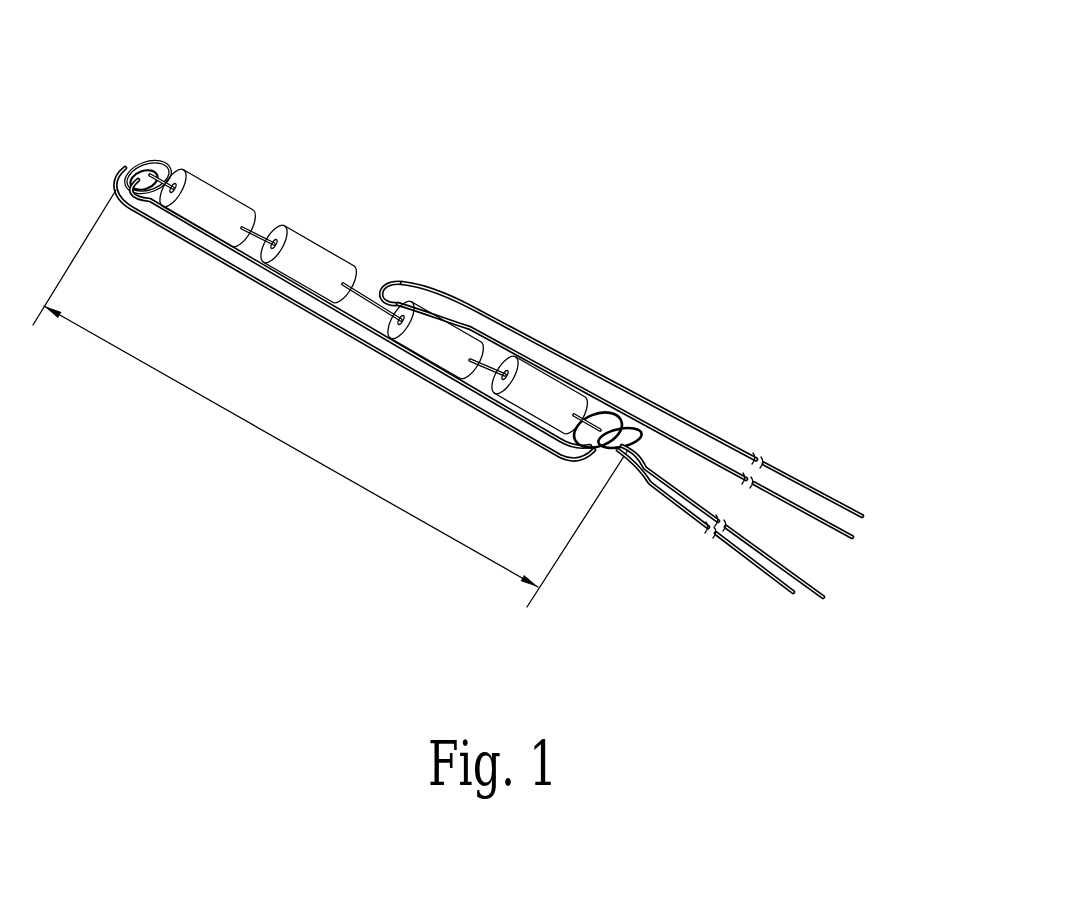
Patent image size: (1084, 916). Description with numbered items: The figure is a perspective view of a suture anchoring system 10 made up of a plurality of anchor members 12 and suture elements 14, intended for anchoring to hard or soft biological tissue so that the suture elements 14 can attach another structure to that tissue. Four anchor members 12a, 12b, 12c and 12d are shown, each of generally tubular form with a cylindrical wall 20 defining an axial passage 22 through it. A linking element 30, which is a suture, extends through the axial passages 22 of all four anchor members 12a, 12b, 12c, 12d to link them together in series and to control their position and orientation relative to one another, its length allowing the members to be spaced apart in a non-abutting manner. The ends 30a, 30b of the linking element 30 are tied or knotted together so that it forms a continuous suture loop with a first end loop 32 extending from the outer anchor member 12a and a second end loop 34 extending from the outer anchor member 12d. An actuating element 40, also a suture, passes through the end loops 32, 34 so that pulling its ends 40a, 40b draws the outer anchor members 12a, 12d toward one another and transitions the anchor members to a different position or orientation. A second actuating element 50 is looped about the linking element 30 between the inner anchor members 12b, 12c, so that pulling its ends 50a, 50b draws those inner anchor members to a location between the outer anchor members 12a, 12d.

The suture anchoring system 10 is at (761, 221).
The anchor members 12 is at (337, 208).
The outer anchor member 12a is at (198, 184).
The inner anchor member 12b is at (331, 255).
The inner anchor member 12c is at (445, 318).
The outer anchor member 12d is at (563, 386).
The suture elements 14 is at (546, 270).
The cylindrical wall 20 is at (296, 258).
The axial passage 22 is at (280, 228).
The linking element 30 is at (512, 341).
The end of linking element 30a is at (606, 452).
The end of linking element 30b is at (633, 456).
The first end loop 32 is at (165, 136).
The second end loop 34 is at (618, 405).
The actuating element 40 is at (200, 262).
The end of actuating element 40a is at (773, 577).
The end of actuating element 40b is at (806, 583).
The second actuating element 50 is at (614, 349).
The end of second actuating element 50a is at (831, 524).
The end of second actuating element 50b is at (846, 506).